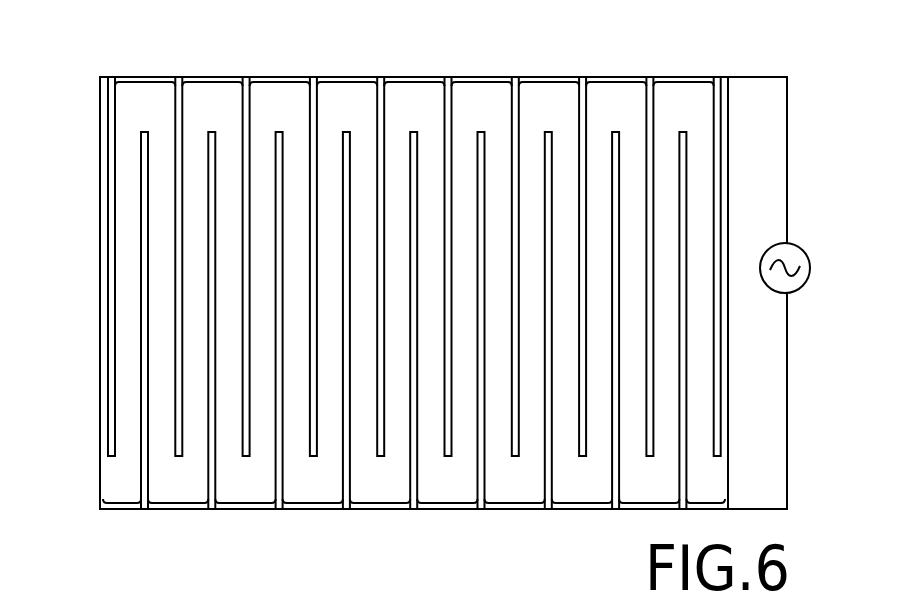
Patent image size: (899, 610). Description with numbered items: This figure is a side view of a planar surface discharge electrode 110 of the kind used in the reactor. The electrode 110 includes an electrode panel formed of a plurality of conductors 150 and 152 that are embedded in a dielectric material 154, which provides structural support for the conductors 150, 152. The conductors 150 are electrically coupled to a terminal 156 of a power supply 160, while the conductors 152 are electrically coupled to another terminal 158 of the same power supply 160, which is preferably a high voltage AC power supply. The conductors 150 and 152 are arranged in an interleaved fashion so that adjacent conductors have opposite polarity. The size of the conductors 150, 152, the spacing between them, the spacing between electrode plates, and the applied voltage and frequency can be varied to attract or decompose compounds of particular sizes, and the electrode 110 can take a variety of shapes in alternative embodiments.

The electrode 110 is at (92, 244).
The conductors 150 is at (582, 78).
The conductors 152 is at (548, 511).
The dielectric material 154 is at (110, 478).
The terminal 156 is at (765, 80).
The terminal 158 is at (783, 508).
The power supply 160 is at (790, 247).